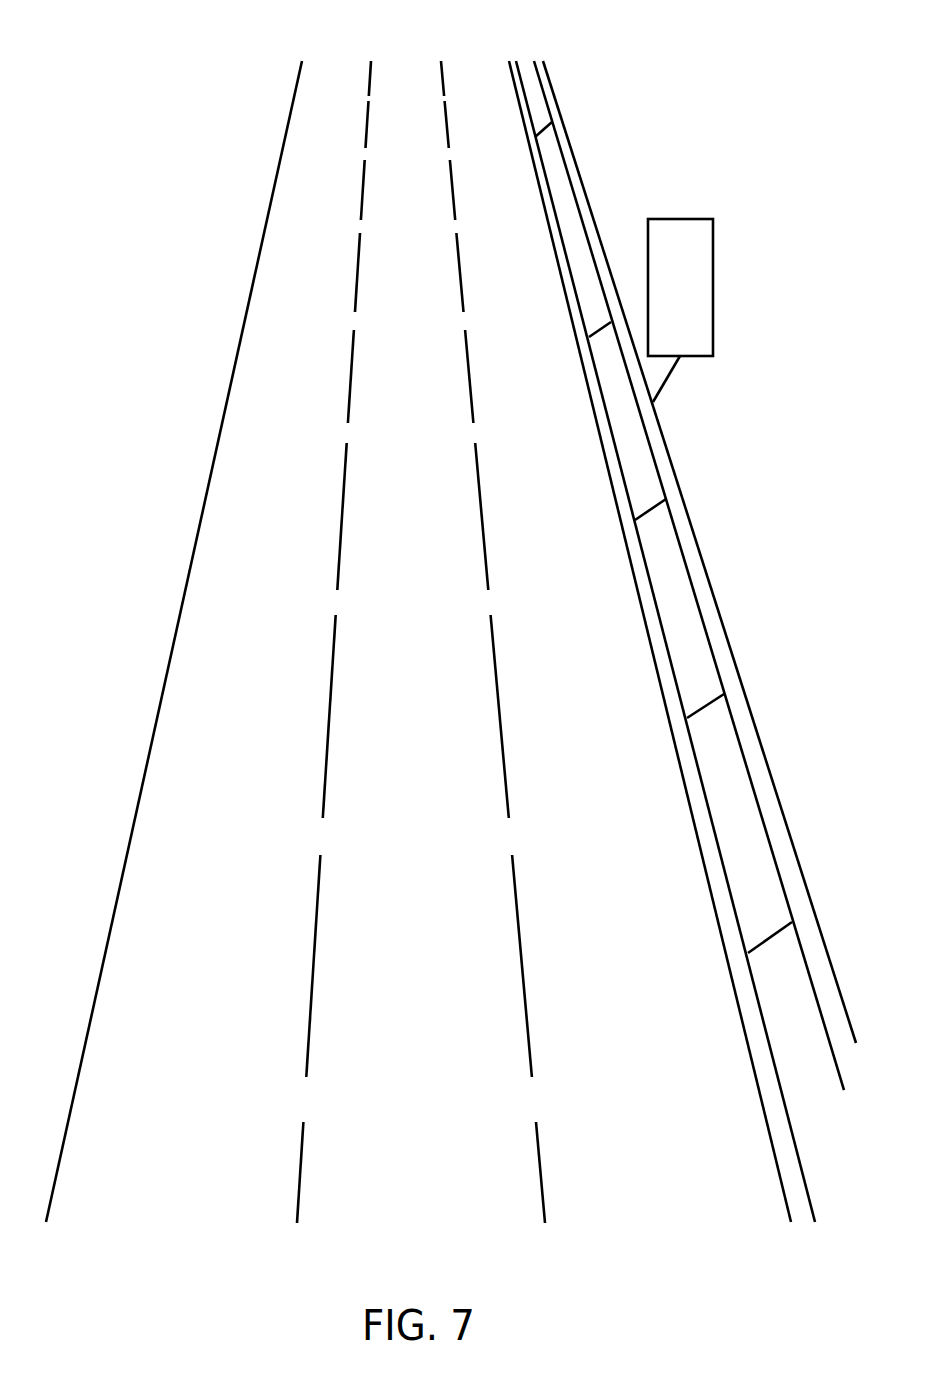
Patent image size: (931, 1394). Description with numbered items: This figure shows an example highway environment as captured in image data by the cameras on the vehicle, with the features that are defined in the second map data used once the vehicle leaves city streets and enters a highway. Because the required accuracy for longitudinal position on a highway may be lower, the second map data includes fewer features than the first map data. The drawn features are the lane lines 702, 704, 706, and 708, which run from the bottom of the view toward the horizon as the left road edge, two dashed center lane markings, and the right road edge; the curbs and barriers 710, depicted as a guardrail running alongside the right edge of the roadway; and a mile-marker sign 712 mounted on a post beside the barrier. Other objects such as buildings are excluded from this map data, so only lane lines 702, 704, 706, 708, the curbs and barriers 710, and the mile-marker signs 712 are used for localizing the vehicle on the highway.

The lane line 702 is at (92, 1010).
The lane line 704 is at (310, 1016).
The lane line 706 is at (526, 1025).
The lane line 708 is at (743, 1026).
The curbs and barriers 710 is at (702, 546).
The mile-marker sign 712 is at (713, 282).